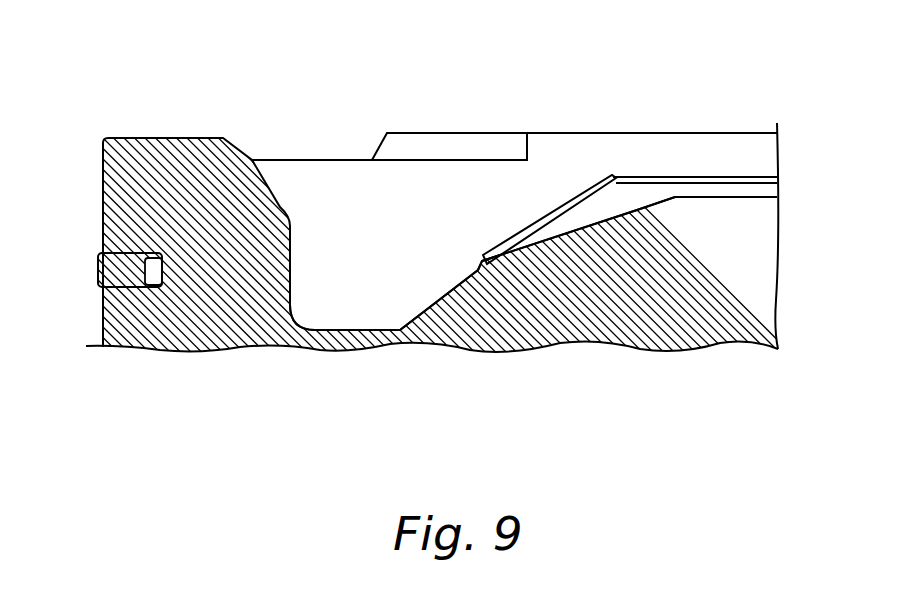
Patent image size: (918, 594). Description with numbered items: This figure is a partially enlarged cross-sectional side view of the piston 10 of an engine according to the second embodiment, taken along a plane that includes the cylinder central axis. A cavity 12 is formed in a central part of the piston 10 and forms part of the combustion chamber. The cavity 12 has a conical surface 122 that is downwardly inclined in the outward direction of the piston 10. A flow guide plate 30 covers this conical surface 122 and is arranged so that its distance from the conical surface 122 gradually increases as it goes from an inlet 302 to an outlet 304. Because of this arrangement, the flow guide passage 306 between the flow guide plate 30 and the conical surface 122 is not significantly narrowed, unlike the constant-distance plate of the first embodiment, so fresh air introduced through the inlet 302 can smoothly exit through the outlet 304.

The piston 10 is at (222, 86).
The cavity 12 is at (368, 267).
The flow guide plate 30 is at (567, 207).
The outlet 304 is at (632, 198).
The inlet 302 is at (477, 277).
The flow guide passage 306 is at (560, 235).
The conical surface 122 is at (633, 213).